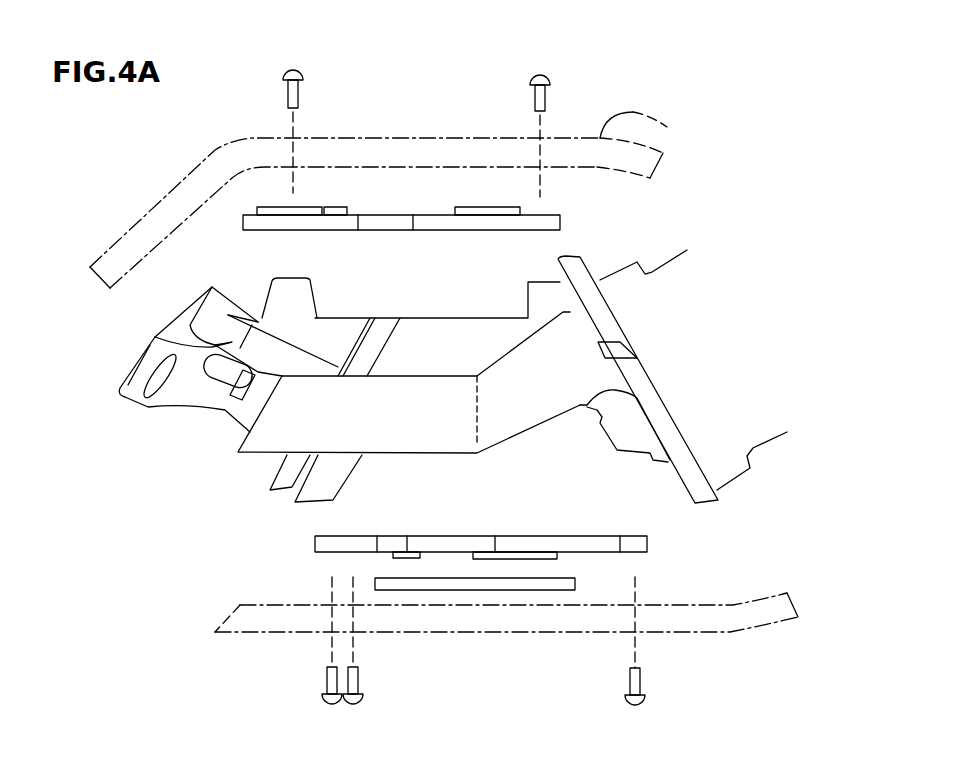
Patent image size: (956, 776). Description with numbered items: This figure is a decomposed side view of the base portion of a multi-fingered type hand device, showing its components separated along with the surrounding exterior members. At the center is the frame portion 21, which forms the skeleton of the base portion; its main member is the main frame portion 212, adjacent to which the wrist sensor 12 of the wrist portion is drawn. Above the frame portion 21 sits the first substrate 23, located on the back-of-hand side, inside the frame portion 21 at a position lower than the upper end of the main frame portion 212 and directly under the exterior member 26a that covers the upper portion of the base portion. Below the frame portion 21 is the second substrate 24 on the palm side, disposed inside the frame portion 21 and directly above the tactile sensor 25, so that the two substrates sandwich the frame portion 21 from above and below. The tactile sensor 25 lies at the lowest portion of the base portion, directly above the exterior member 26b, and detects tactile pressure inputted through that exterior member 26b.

The wrist sensor 12 is at (683, 277).
The main frame portion 212 is at (620, 328).
The frame portion 21 is at (186, 436).
The first substrate 23 is at (560, 222).
The second substrate 24 is at (647, 545).
The tactile sensor 25 is at (527, 590).
The exterior member 26a is at (665, 128).
The exterior member 26b is at (733, 635).